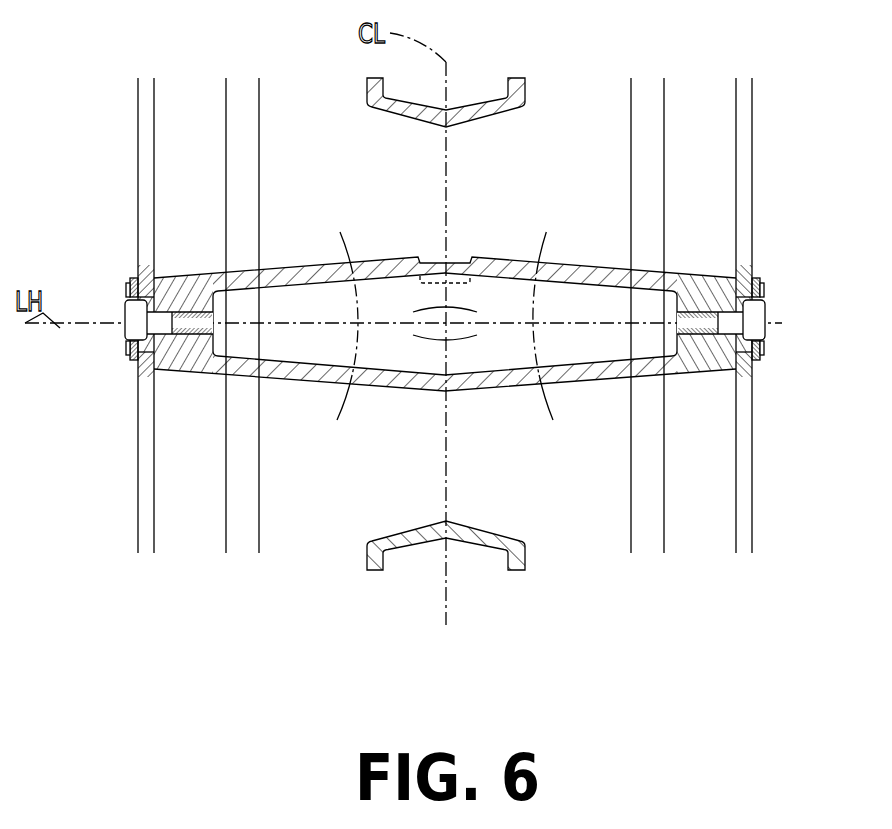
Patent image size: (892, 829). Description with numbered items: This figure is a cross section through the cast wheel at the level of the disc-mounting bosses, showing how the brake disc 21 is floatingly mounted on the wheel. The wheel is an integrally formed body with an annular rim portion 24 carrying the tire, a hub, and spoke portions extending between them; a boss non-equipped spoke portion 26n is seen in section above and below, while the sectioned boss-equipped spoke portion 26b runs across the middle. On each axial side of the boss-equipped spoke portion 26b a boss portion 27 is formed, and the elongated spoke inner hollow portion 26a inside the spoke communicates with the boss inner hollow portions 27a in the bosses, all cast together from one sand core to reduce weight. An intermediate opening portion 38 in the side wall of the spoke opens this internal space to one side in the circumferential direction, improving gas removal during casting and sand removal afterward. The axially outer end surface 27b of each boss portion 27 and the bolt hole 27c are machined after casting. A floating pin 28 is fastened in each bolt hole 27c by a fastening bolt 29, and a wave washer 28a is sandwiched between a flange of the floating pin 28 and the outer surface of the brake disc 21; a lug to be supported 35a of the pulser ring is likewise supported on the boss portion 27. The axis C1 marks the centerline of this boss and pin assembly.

The brake disc 21 is at (134, 89).
The rim portion 24 is at (672, 93).
The boss non-equipped spoke portion 26n is at (534, 87).
The spoke inner hollow portion 26a is at (500, 293).
The boss-equipped spoke portion 26b is at (556, 249).
The boss portion 27 is at (443, 334).
The boss inner hollow portion 27a is at (297, 352).
The end surface 27b is at (130, 350).
The bolt hole 27c is at (189, 310).
The floating pin 28 is at (130, 291).
The wave washer 28a is at (135, 283).
The fastening bolt 29 is at (125, 333).
The lug to be supported 35a is at (718, 368).
The intermediate opening portion 38 is at (430, 257).
The roller axis C1 is at (775, 322).